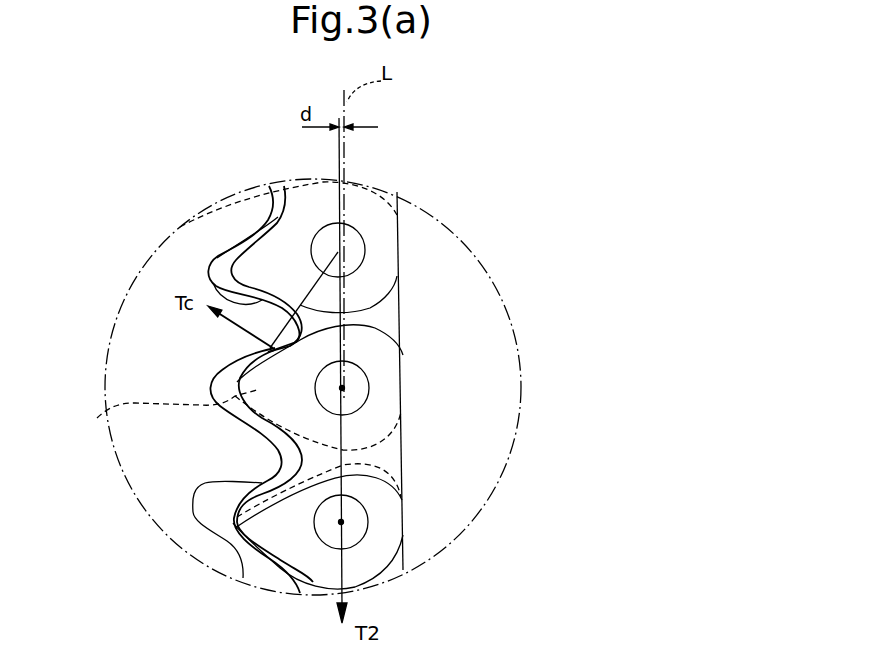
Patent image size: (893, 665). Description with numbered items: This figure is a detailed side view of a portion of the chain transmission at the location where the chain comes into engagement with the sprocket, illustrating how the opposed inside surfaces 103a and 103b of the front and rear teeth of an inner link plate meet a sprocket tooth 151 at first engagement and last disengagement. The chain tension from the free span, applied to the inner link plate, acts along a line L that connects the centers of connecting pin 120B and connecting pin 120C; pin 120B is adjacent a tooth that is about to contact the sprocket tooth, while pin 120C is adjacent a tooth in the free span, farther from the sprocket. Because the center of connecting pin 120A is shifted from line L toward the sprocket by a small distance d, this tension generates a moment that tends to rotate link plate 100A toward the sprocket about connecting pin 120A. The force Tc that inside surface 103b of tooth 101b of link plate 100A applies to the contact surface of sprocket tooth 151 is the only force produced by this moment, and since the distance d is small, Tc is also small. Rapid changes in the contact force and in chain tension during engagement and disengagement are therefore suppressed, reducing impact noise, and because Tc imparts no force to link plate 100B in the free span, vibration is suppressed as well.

The connecting pin 120A is at (353, 242).
The connecting pin 120B is at (353, 383).
The connecting pin 120C is at (357, 521).
The link plate 100A is at (388, 316).
The link plate 100B is at (388, 458).
The inside surface 103a is at (220, 288).
The inside surface 103b is at (247, 362).
The sprocket tooth 151 is at (243, 347).
The tooth 101b is at (98, 415).